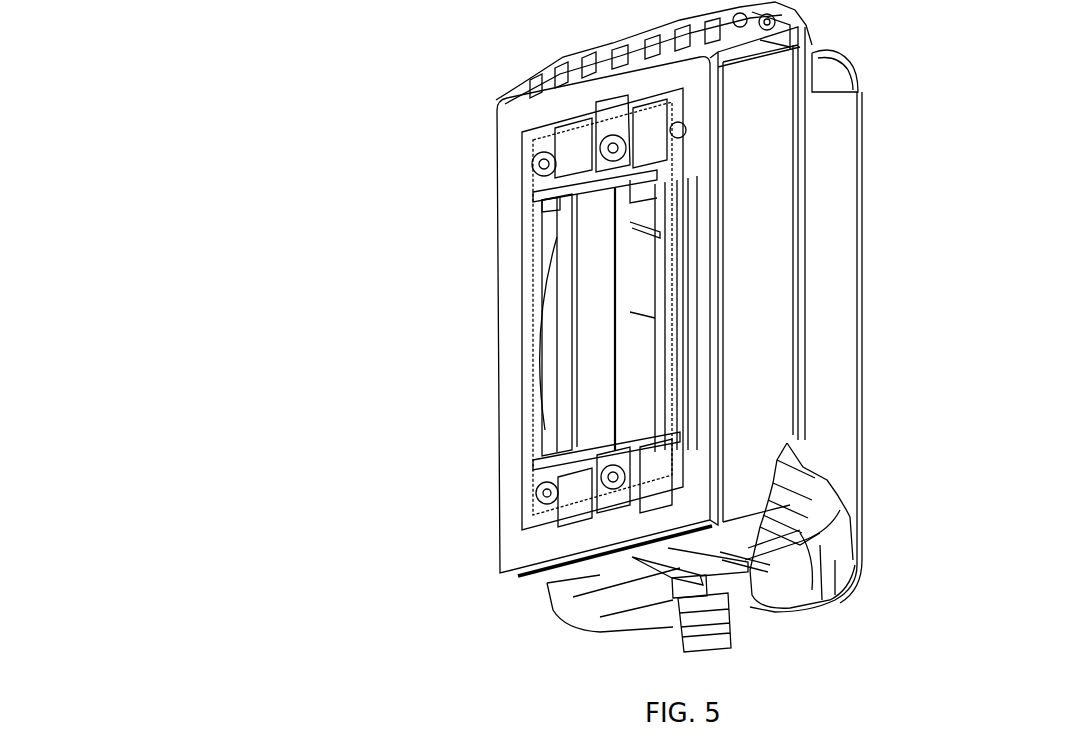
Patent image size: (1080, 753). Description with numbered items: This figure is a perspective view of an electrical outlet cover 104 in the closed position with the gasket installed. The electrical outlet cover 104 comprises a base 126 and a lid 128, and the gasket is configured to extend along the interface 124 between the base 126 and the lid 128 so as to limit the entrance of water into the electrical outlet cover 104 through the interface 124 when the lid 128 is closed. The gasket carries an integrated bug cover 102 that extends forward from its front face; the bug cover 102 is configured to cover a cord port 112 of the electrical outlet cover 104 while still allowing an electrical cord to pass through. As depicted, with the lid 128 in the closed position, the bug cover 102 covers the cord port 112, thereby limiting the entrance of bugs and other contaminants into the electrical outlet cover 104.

The electrical outlet cover 104 is at (384, 162).
The base 126 is at (743, 233).
The interface 124 is at (805, 214).
The lid 128 is at (828, 331).
The bug cover 102 is at (791, 509).
The cord port 112 is at (825, 575).